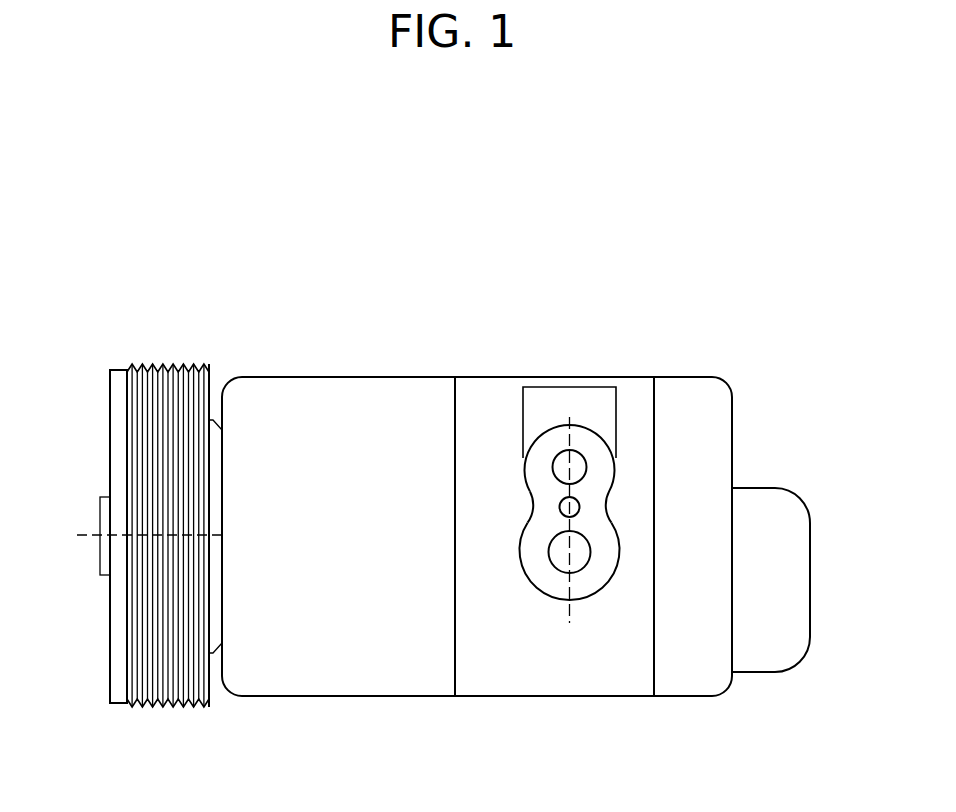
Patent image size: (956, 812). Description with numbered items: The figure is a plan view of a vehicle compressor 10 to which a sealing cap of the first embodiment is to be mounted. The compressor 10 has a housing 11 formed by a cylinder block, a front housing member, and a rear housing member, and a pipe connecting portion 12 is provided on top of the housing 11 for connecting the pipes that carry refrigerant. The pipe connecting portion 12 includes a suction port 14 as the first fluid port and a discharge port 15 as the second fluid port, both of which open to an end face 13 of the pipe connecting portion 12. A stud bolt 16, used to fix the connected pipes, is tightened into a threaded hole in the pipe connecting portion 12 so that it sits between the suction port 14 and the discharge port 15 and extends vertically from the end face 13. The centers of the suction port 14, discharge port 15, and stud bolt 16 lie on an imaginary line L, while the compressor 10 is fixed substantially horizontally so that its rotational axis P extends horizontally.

The compressor 10 is at (333, 257).
The housing 11 is at (502, 672).
The pipe connecting portion 12 is at (612, 498).
The end face 13 is at (605, 565).
The suction port 14 is at (592, 553).
The discharge port 15 is at (588, 468).
The stud bolt 16 is at (559, 507).